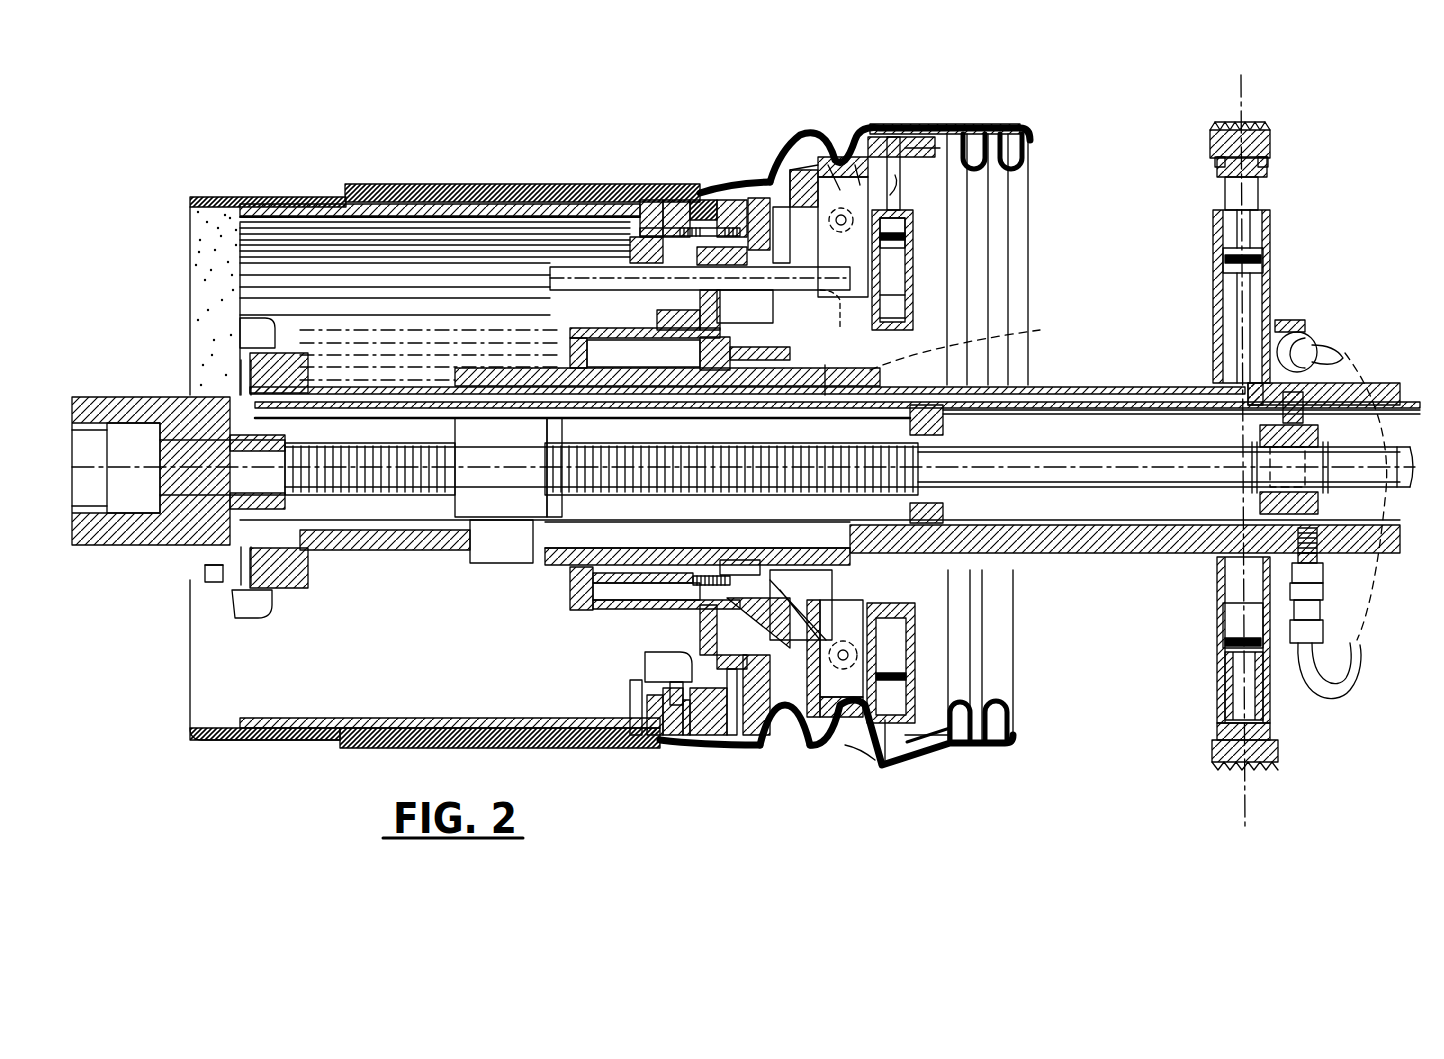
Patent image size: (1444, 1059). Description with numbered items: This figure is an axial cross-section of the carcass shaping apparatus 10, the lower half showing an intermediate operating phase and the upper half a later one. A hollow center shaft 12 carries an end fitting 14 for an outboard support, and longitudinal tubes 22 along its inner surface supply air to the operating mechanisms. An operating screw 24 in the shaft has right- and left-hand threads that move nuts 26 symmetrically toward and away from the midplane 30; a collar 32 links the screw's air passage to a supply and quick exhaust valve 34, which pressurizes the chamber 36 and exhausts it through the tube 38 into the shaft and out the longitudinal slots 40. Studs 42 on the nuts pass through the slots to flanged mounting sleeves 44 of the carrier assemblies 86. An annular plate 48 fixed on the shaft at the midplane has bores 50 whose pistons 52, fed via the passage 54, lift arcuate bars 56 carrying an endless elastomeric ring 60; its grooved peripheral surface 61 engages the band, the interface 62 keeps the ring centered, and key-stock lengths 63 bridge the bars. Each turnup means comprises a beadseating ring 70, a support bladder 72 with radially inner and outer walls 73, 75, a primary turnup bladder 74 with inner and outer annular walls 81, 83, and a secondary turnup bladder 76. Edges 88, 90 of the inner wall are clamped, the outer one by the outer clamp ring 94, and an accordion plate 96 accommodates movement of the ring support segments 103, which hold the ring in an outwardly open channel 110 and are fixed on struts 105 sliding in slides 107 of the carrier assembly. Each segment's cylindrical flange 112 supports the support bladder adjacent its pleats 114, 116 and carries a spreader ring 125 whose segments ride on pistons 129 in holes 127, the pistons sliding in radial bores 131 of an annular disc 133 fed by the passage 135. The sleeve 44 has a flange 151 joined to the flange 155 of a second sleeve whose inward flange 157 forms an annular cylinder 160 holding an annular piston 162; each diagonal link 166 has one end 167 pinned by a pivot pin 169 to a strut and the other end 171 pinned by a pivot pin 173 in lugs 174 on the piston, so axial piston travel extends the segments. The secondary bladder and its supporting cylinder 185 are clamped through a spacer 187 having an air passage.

The carcass shaping apparatus 10 is at (1062, 148).
The hollow center shaft 12 is at (362, 548).
The end fitting 14 is at (172, 398).
The longitudinal tubes 22 is at (378, 522).
The operating screw 24 is at (1042, 480).
The nuts 26 is at (518, 482).
The midplane 30 is at (1243, 95).
The collar 32 is at (1305, 497).
The supply and quick exhaust valve 34 is at (1300, 340).
The chamber 36 is at (1160, 306).
The tube 38 is at (1330, 688).
The longitudinal slots 40 is at (685, 535).
The studs 42 is at (493, 560).
The flanged mounting sleeves 44 is at (530, 375).
The annular plate 48 is at (1268, 305).
The cylindrical bores 50 is at (1255, 292).
The piston 52 is at (1255, 258).
The passage 54 is at (1108, 392).
The arcuate bar 56 is at (1268, 173).
The endless elastomeric ring 60 is at (1265, 145).
The peripheral surface 61 is at (1255, 128).
The interface 62 is at (1226, 182).
The arcuate lengths of key stock 63 is at (1268, 163).
The beadseating ring 70 is at (832, 133).
The support bladder 72 is at (1000, 128).
The radially inner wall 73 is at (968, 140).
The primary turnup bladder 74 is at (458, 186).
The radially outer wall 75 is at (1075, 108).
The secondary turnup bladder 76 is at (247, 198).
The inner annular wall 81 is at (820, 170).
The outer annular wall 83 is at (702, 188).
The carrier assembly 86 is at (560, 325).
The edge 88 is at (730, 745).
The edge 90 is at (695, 748).
The outer clamp ring 94 is at (655, 745).
The accordion plate 96 is at (772, 745).
The ring support segments 103 is at (792, 175).
The strut 105 is at (835, 190).
The slide 107 is at (838, 305).
The channel 110 is at (830, 160).
The cylindrical flange 112 is at (935, 150).
The accordion pleat 114 is at (962, 700).
The accordion pleat 116 is at (1005, 700).
The spreader ring 125 is at (902, 137).
The hole 127 is at (900, 170).
The piston 129 is at (905, 205).
The radial bore 131 is at (908, 262).
The annular disc 133 is at (908, 305).
The passage 135 is at (908, 320).
The flange 151 is at (862, 612).
The flange 155 is at (822, 320).
The flange 157 is at (572, 350).
The annular cylinder 160 is at (628, 345).
The annular piston 162 is at (700, 356).
The diagonal link 166 is at (808, 628).
The end of link 167 is at (830, 680).
The pivot pin 169 is at (838, 653).
The other end of link 171 is at (832, 395).
The pivot pin 173 is at (1040, 330).
The lugs 174 is at (728, 560).
The supporting cylinder 185 is at (372, 718).
The spacer 187 is at (655, 690).